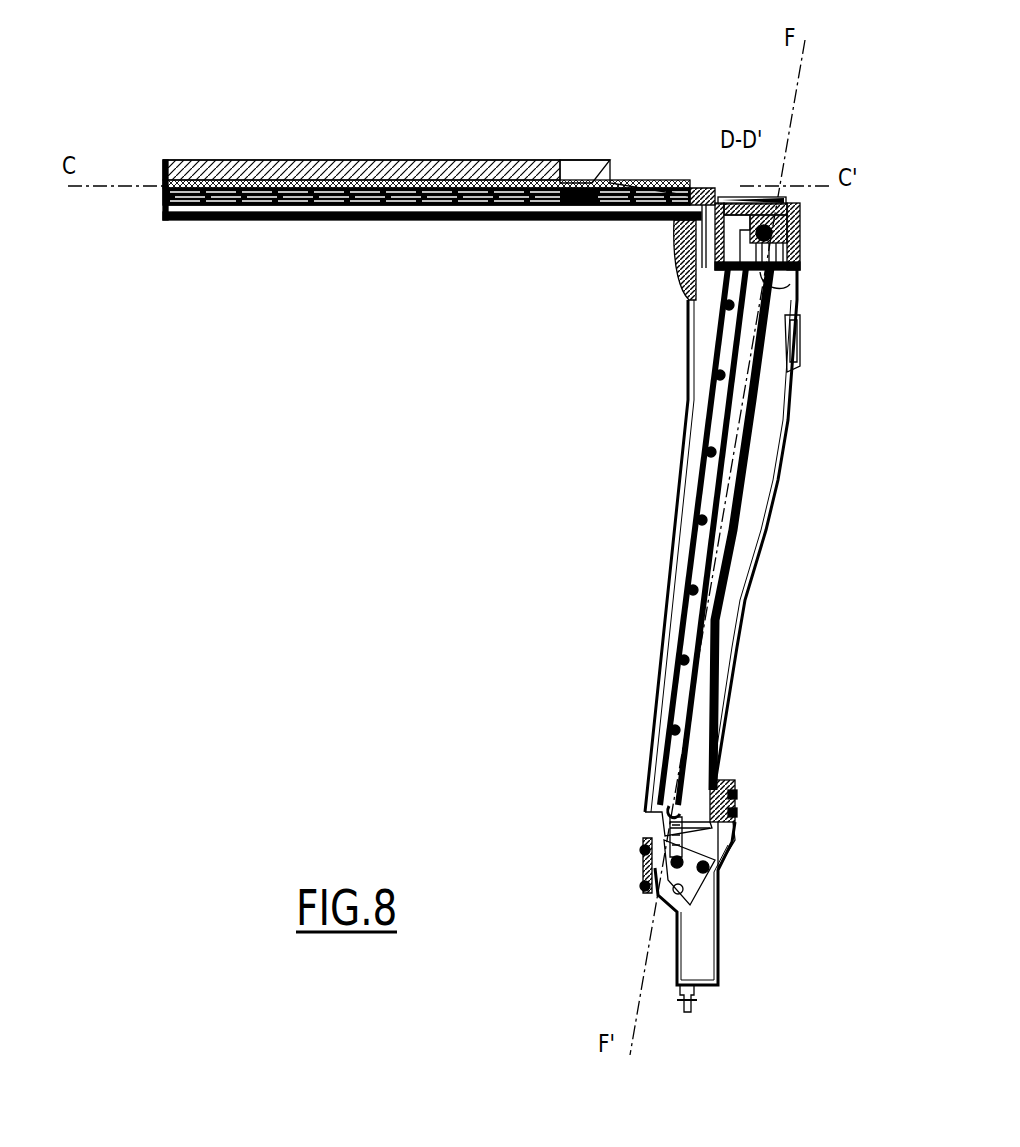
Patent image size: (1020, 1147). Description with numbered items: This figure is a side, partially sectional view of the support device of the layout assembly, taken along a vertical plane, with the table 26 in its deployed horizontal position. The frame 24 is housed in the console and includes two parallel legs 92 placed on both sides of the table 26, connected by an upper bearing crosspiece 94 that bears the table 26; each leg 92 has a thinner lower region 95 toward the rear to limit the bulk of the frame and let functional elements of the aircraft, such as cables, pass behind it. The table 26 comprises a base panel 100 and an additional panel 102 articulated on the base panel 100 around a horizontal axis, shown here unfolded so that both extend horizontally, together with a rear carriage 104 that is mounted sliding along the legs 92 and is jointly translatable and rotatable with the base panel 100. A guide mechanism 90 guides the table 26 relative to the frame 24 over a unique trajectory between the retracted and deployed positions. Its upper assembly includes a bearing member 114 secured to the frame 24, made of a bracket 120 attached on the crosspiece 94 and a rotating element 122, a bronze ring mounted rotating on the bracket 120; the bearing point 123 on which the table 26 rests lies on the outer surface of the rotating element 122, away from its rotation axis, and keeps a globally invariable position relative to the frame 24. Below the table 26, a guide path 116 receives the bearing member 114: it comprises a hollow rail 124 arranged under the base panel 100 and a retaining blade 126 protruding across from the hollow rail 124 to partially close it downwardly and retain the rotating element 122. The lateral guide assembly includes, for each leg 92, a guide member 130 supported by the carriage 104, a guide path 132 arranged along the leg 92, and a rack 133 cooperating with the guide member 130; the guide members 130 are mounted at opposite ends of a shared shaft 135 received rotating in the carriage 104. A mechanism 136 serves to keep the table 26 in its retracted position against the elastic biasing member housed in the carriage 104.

The frame 24 is at (751, 636).
The table 26 is at (481, 118).
The guide mechanism 90 is at (795, 169).
The leg 92 is at (722, 746).
The upper bearing crosspiece 94 is at (680, 294).
The thinner lower region 95 is at (755, 565).
The base panel 100 is at (248, 222).
The additional panel 102 is at (295, 158).
The rear carriage 104 is at (755, 275).
The bearing member 114 is at (672, 233).
The guide path 116 is at (202, 225).
The bracket 120 is at (672, 258).
The rotating element 122 is at (700, 204).
The bearing point 123 is at (703, 205).
The hollow rail 124 is at (392, 222).
The retaining blade 126 is at (322, 222).
The guide member 130 is at (790, 214).
The guide path 132 is at (720, 550).
The rack 133 is at (712, 440).
The shared shaft 135 is at (800, 234).
The retaining mechanism 136 is at (648, 868).